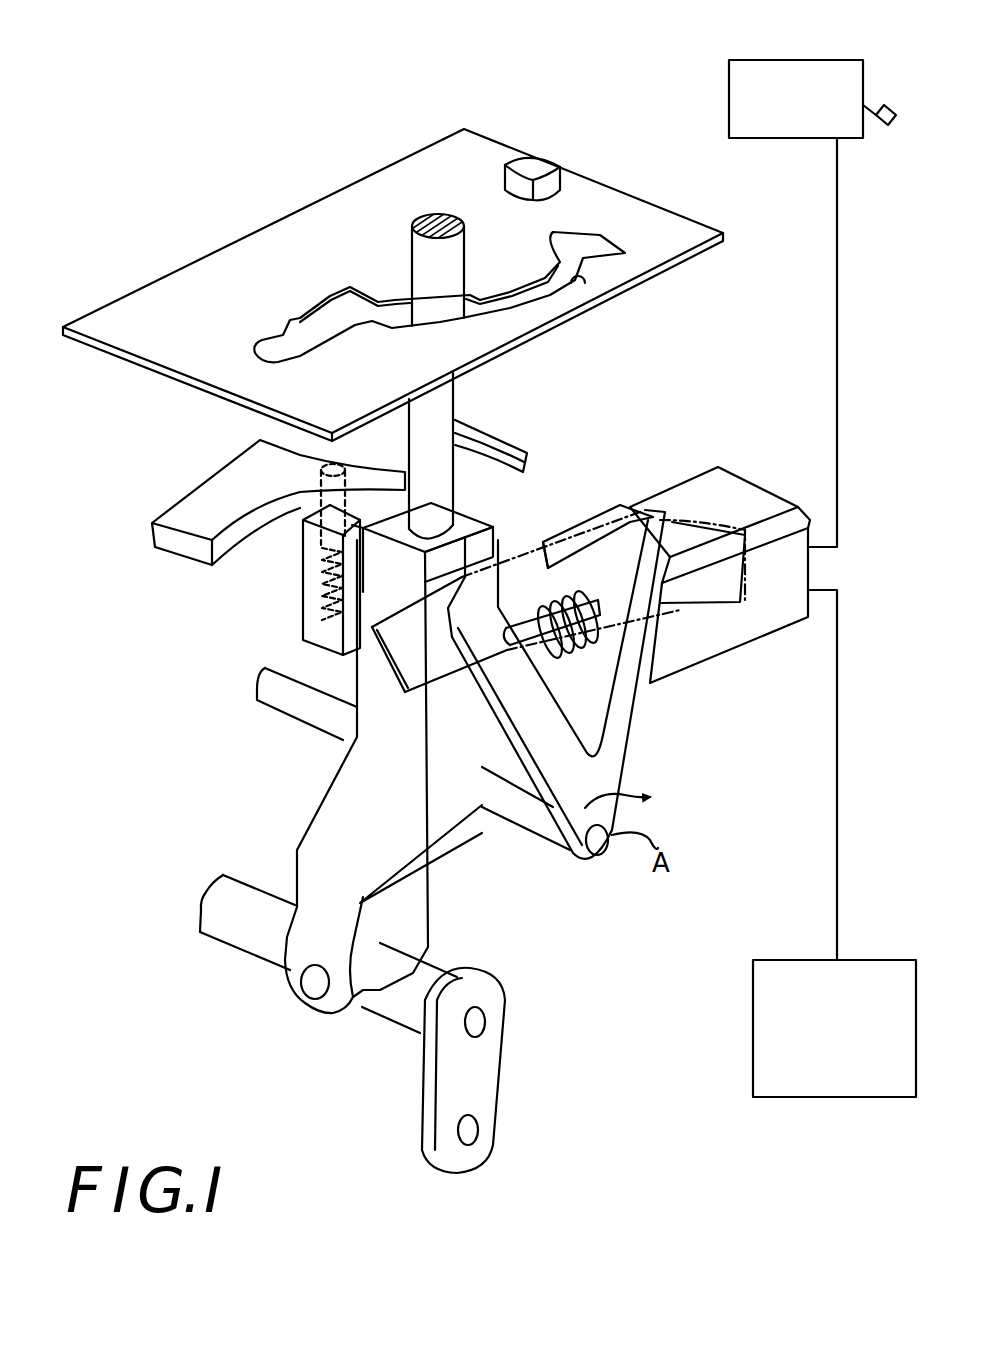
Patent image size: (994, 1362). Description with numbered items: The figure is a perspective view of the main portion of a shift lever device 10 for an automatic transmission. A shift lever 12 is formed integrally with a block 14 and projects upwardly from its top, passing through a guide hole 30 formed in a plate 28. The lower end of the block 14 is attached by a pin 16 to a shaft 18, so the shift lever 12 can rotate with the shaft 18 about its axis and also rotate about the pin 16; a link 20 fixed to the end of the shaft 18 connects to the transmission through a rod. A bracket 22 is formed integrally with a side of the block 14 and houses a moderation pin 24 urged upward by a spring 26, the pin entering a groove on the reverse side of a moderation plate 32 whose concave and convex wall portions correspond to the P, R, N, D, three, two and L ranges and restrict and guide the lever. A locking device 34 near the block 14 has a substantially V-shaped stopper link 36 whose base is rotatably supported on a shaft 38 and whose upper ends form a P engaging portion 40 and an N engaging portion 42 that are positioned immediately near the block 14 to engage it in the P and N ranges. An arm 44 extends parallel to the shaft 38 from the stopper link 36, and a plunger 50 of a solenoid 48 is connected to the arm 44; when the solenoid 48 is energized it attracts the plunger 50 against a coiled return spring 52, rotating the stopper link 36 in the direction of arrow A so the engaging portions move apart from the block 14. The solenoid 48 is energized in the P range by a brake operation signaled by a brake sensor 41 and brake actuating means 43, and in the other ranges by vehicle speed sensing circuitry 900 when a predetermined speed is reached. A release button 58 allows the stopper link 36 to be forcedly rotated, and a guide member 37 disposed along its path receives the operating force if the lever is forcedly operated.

The shift lever device 10 is at (106, 574).
The shift lever 12 is at (466, 396).
The block 14 is at (308, 788).
The pin 16 is at (306, 998).
The shaft 18 is at (232, 952).
The link 20 is at (500, 1075).
The bracket 22 is at (305, 596).
The moderation pin 24 is at (297, 552).
The spring 26 is at (290, 630).
The plate 28 is at (606, 188).
The guide hole 30 is at (586, 266).
The moderation plate 32 is at (196, 481).
The locking device 34 is at (600, 472).
The stopper link 36 is at (632, 752).
The guide member 37 is at (748, 600).
The shaft 38 is at (524, 832).
The P engaging portion 40 is at (628, 510).
The brake sensor 41 is at (772, 140).
The N engaging portion 42 is at (464, 552).
The brake actuating means 43 is at (872, 104).
The arm 44 is at (612, 706).
The solenoid 48 is at (746, 478).
The plunger 50 is at (512, 612).
The return spring 52 is at (560, 545).
The release button 58 is at (538, 152).
The vehicle speed sensing circuitry 900 is at (838, 1098).